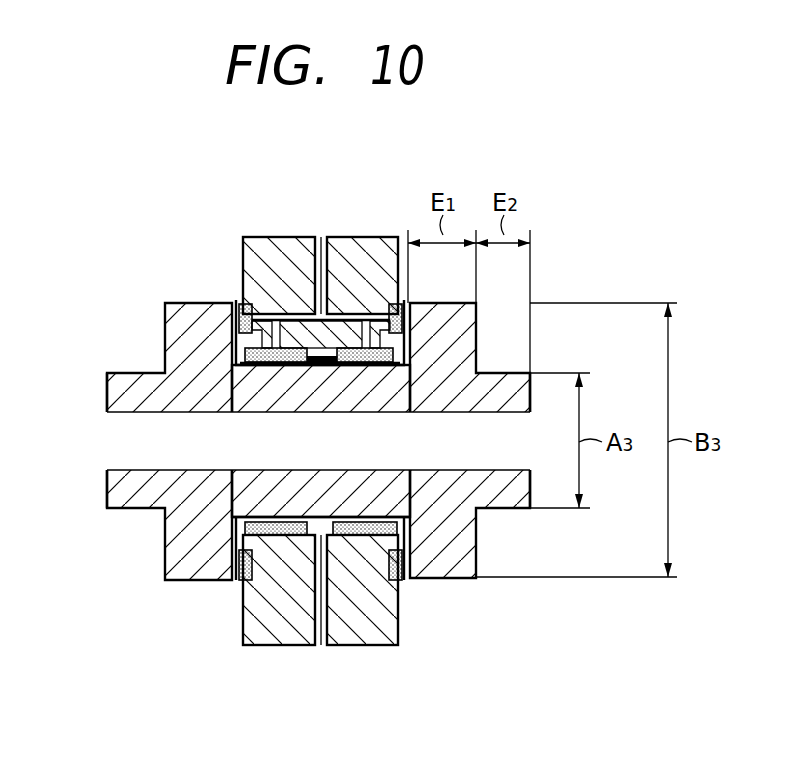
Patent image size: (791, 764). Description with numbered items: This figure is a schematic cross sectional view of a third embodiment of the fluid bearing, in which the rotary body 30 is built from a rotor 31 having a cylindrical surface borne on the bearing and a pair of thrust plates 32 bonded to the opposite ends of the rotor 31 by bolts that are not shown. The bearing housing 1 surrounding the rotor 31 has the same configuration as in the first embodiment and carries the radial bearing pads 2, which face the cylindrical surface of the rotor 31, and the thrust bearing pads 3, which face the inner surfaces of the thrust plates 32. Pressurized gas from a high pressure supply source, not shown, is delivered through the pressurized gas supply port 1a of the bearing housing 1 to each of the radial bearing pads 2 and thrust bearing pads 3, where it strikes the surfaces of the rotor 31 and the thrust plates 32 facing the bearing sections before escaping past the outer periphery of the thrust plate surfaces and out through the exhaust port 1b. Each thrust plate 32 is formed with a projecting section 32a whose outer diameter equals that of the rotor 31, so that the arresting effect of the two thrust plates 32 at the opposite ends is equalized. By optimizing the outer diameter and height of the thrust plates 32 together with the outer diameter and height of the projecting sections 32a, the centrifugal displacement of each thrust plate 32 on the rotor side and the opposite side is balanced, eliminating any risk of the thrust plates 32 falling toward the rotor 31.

The rotary body 30 is at (530, 162).
The bearing housing 1 is at (372, 240).
The pressurized gas supply port 1a is at (322, 237).
The exhaust port 1b is at (318, 640).
The radial bearing pads 2 is at (264, 533).
The thrust bearing pads 3 is at (239, 565).
The rotor 31 is at (262, 395).
The thrust plates 32 is at (185, 312).
The projecting section 32a is at (107, 478).